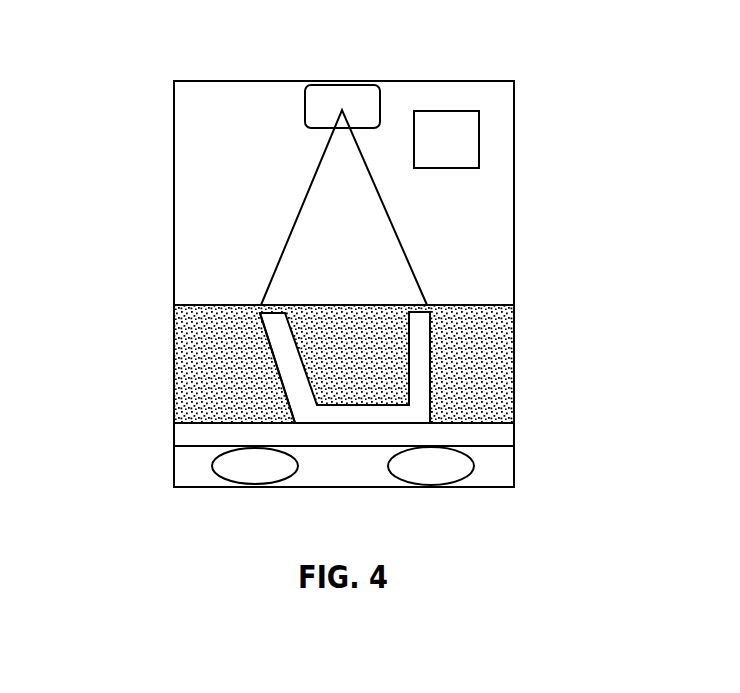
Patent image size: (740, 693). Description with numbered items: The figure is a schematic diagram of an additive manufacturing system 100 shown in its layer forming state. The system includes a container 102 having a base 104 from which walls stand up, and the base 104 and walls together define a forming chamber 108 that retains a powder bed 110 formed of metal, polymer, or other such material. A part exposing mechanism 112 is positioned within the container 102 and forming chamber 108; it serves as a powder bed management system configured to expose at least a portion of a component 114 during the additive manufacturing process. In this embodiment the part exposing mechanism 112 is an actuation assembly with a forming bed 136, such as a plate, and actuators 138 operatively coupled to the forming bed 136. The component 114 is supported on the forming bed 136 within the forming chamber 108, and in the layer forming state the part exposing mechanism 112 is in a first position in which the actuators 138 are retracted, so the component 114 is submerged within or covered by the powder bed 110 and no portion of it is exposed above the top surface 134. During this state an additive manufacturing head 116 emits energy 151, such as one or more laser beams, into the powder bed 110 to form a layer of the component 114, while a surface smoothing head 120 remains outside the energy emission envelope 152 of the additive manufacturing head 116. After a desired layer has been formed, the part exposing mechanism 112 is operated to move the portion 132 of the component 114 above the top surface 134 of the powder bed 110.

The additive manufacturing system 100 is at (123, 82).
The container 102 is at (188, 484).
The base 104 is at (313, 488).
The forming chamber 108 is at (323, 326).
The powder bed 110 is at (500, 305).
The part exposing mechanism 112 is at (517, 435).
The component 114 is at (273, 352).
The additive manufacturing head 116 is at (303, 104).
The surface smoothing head 120 is at (481, 139).
The portion of the component 132 is at (345, 319).
The top surface 134 is at (424, 319).
The forming bed 136 is at (488, 423).
The actuator 138 is at (475, 465).
The energy 151 is at (343, 207).
The energy emission envelope 152 is at (290, 237).